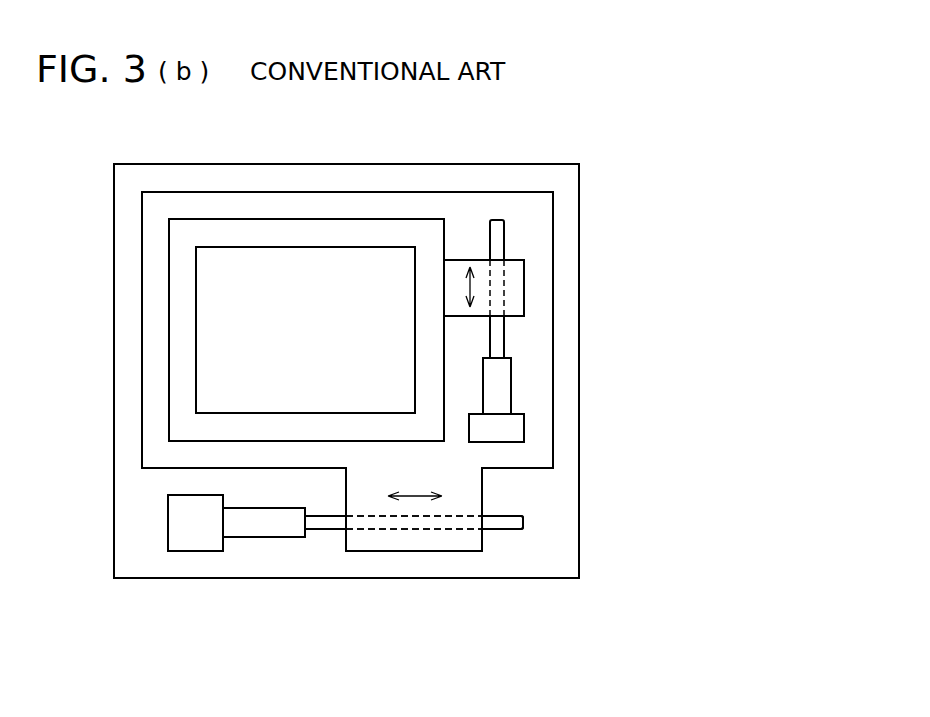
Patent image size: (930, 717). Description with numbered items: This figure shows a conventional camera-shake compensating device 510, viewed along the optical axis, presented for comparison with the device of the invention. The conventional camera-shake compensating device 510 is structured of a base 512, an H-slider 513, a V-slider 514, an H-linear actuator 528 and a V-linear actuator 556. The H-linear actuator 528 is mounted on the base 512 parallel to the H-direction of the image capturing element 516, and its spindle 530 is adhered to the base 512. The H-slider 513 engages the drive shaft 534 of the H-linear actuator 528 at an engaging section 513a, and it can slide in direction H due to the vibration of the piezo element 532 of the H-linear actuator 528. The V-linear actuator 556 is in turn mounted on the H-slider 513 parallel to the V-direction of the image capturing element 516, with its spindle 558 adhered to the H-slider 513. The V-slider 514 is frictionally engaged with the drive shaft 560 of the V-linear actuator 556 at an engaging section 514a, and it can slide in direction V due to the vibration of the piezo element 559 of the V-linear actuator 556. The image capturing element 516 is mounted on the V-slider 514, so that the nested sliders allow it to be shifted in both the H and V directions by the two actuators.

The conventional camera-shake compensating device 510 is at (628, 178).
The base 512 is at (579, 297).
The H-slider 513 is at (553, 465).
The engaging section 513a is at (440, 551).
The V-slider 514 is at (455, 207).
The engaging section 514a is at (524, 276).
The image capturing element 516 is at (338, 260).
The H-linear actuator 528 is at (357, 655).
The spindle 530 is at (198, 538).
The piezo element 532 is at (262, 530).
The drive shaft 534 is at (327, 528).
The V-linear actuator 556 is at (670, 320).
The spindle 558 is at (524, 424).
The piezo element 559 is at (511, 385).
The drive shaft 560 is at (504, 340).